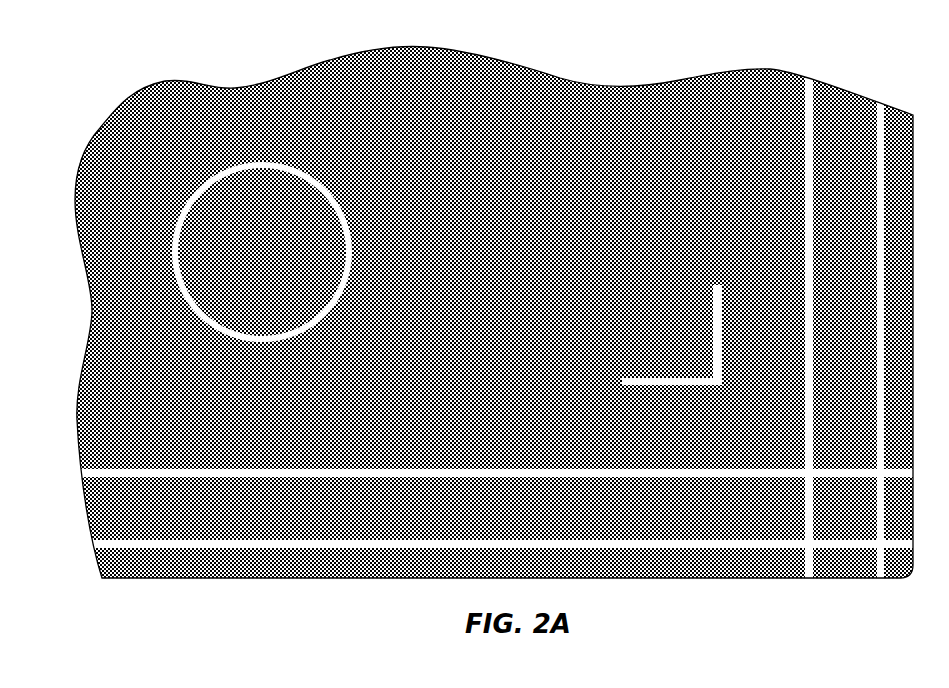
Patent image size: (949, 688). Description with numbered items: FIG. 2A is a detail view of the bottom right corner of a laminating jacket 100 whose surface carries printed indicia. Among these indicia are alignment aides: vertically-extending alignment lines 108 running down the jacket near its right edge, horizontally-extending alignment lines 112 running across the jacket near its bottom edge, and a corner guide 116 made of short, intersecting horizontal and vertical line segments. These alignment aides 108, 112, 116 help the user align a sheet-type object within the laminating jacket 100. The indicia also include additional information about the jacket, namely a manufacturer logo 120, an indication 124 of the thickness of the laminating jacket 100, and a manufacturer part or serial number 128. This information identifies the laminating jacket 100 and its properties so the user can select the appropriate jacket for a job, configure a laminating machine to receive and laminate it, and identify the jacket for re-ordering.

The laminating jacket 100 is at (184, 42).
The vertically-extending alignment lines 108 is at (880, 137).
The horizontally-extending alignment lines 112 is at (490, 508).
The corner guides 116 is at (668, 380).
The manufacturer logo 120 is at (331, 167).
The indication of the thickness 124 is at (648, 208).
The manufacturer part or serial number 128 is at (676, 246).